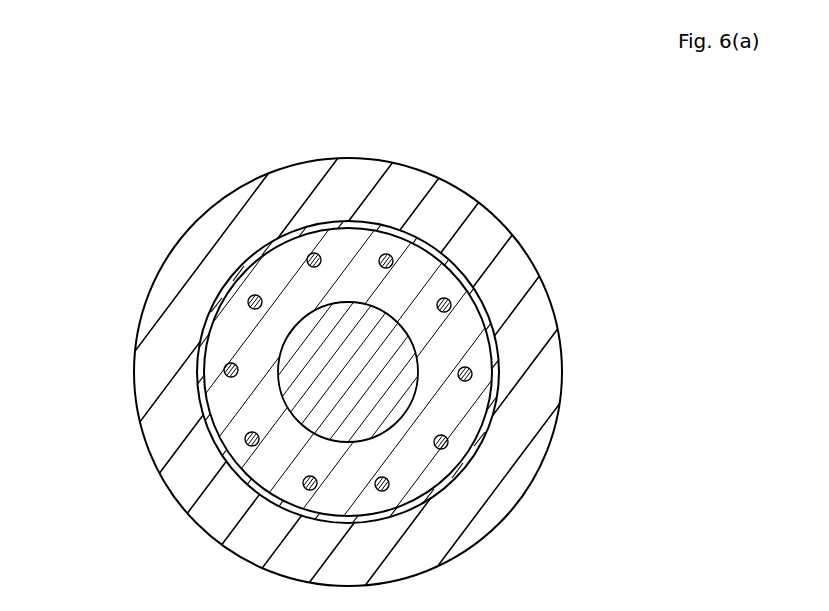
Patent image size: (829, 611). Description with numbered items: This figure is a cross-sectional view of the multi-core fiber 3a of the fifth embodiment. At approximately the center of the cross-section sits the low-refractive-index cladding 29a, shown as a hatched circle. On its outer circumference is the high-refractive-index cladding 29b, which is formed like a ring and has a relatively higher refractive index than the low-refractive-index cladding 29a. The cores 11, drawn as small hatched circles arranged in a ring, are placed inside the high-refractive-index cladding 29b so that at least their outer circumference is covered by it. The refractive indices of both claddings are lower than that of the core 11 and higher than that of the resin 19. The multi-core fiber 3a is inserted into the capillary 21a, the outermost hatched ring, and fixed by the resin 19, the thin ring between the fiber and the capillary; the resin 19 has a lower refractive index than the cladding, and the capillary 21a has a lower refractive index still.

The capillary 21a is at (497, 510).
The resin 19 is at (203, 342).
The multi-core fiber 3a is at (485, 346).
The high-refractive-index cladding 29b is at (262, 462).
The low-refractive-index cladding 29a is at (315, 328).
The core 11 is at (478, 378).